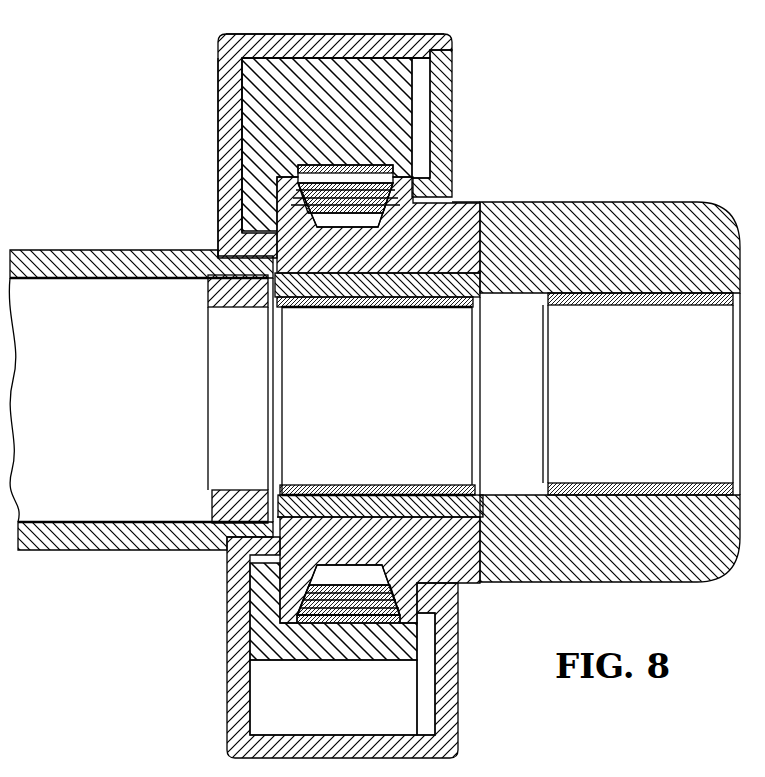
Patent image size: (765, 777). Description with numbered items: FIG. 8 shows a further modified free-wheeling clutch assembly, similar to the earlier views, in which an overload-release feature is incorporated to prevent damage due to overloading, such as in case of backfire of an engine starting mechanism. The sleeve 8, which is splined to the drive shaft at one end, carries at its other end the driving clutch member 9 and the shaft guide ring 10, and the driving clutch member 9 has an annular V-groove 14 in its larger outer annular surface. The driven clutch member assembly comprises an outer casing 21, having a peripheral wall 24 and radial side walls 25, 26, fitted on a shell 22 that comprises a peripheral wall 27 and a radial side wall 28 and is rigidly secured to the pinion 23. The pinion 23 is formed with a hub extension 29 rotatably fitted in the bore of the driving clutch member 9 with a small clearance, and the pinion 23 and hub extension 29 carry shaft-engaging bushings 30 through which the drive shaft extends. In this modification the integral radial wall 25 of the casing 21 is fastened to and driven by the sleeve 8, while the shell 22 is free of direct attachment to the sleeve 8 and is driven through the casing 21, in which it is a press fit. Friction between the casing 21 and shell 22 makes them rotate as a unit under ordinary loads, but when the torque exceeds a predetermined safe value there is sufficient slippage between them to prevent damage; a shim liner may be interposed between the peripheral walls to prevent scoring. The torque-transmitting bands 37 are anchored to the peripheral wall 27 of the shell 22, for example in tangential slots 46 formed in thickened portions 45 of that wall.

The sleeve 8 is at (114, 250).
The shaft guide ring 10 is at (207, 294).
The outer casing 21 is at (300, 133).
The peripheral wall 24 is at (336, 34).
The radial side wall 25 is at (218, 173).
The tangential slot 46 is at (283, 142).
The radial side wall 26 is at (449, 122).
The thickened portion 45 is at (413, 83).
The torque-transmitting band 37 is at (349, 178).
The annular V-groove 14 is at (360, 210).
The driving clutch member 9 is at (328, 270).
The hub extension 29 is at (315, 502).
The pinion 23 is at (600, 200).
The shaft-engaging bushing 30 is at (453, 409).
The shell 22 is at (422, 638).
The radial side wall 28 is at (248, 588).
The peripheral wall 27 is at (290, 656).